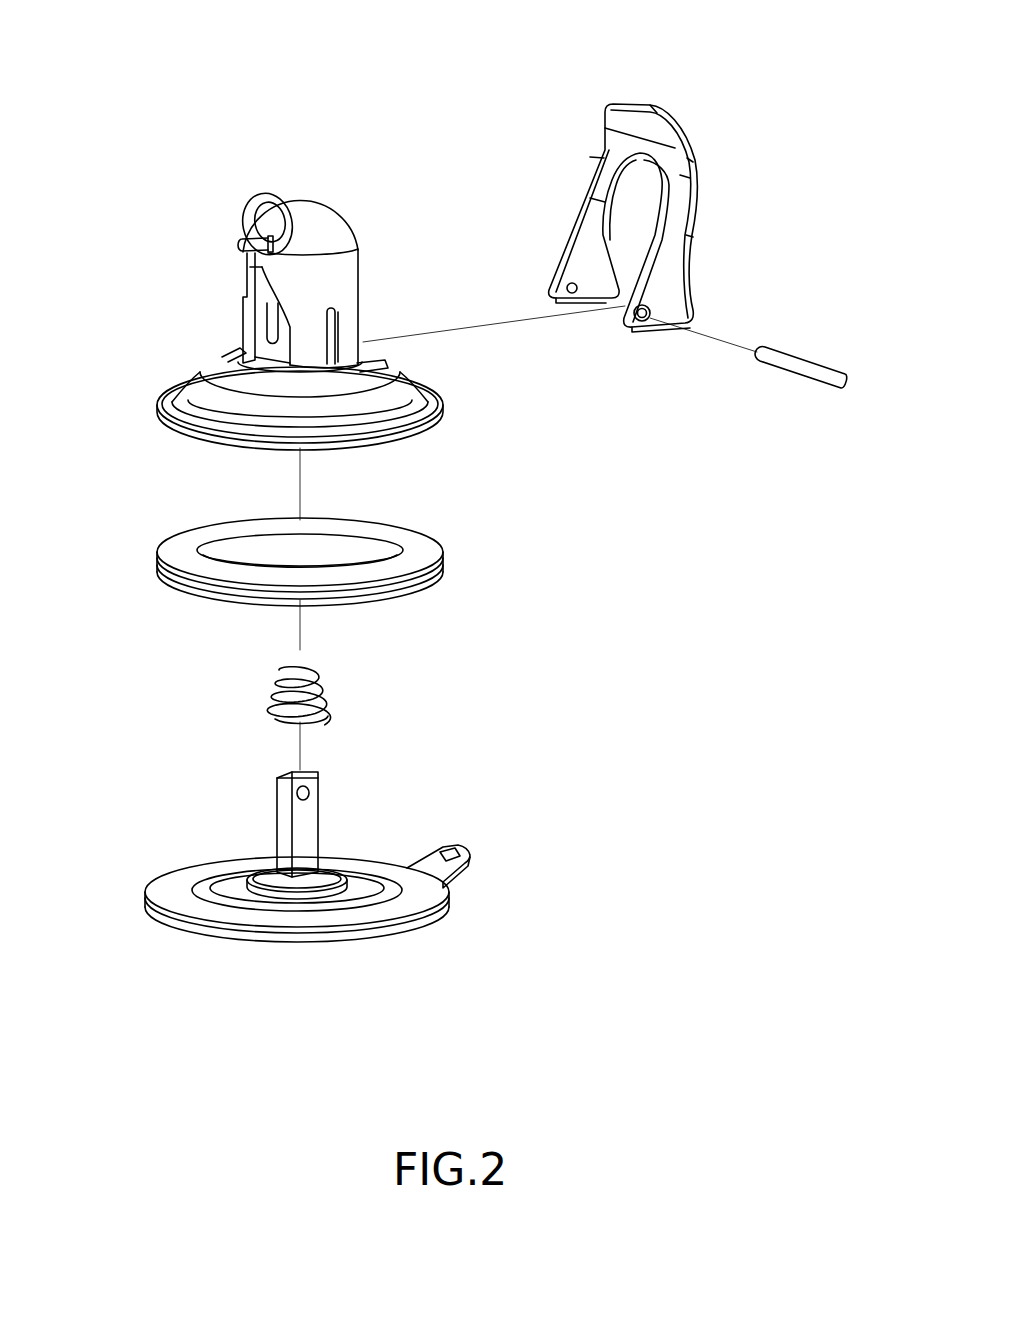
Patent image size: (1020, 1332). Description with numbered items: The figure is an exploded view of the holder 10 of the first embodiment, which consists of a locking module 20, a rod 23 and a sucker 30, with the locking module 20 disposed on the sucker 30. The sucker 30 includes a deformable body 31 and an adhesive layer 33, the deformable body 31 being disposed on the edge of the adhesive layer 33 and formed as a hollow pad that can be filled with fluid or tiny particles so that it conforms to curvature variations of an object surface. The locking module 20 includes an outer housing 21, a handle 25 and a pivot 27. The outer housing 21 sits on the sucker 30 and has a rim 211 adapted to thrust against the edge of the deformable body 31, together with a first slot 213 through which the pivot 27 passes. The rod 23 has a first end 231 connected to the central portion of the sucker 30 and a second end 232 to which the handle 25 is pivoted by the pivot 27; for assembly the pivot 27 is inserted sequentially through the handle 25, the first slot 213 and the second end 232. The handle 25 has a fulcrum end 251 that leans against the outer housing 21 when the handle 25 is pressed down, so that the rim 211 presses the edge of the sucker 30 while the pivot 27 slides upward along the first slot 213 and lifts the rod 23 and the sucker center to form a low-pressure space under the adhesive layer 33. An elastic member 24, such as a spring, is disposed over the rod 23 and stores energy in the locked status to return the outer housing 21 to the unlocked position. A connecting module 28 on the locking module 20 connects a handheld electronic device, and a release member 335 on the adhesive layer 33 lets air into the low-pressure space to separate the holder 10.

The holder 10 is at (233, 44).
The locking module 20 is at (146, 156).
The outer housing 21 is at (296, 183).
The rim 211 is at (160, 412).
The first slot 213 is at (337, 317).
The connecting module 28 is at (238, 241).
The handle 25 is at (650, 106).
The fulcrum end 251 is at (692, 320).
The pivot 27 is at (812, 385).
The sucker 30 is at (596, 690).
The deformable body 31 is at (160, 552).
The elastic member 24 is at (333, 690).
The rod 23 is at (276, 815).
The second end 232 is at (320, 782).
The first end 231 is at (330, 870).
The adhesive layer 33 is at (448, 913).
The release member 335 is at (468, 848).